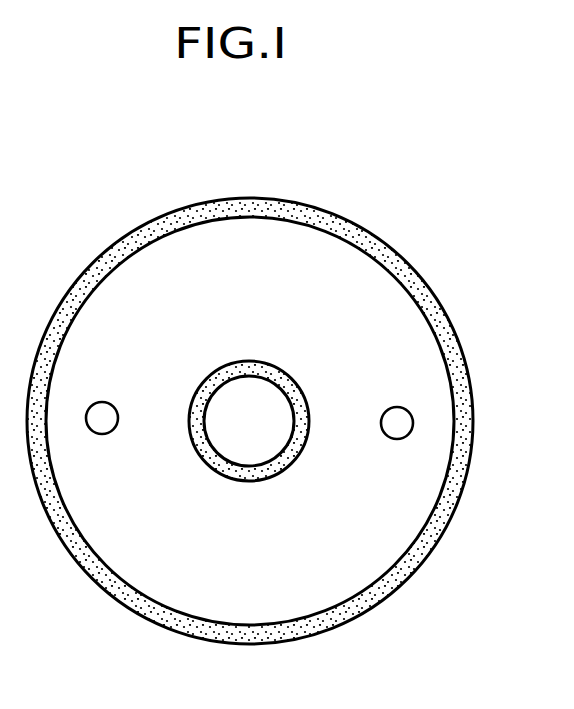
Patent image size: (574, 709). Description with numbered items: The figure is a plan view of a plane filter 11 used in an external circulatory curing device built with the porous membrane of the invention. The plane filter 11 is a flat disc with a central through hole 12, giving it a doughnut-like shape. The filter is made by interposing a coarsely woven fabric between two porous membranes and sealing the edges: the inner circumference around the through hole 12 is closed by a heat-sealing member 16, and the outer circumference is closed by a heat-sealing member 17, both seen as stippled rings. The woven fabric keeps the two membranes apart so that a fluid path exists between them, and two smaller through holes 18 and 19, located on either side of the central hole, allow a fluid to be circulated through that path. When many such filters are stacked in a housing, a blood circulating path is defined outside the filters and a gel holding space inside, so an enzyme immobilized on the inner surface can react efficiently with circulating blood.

The plane filter 11 is at (357, 208).
The through hole 12 is at (236, 394).
The heat-sealing member 16 is at (287, 373).
The heat-sealing member 17 is at (431, 288).
The through hole 18 is at (100, 420).
The through hole 19 is at (394, 425).